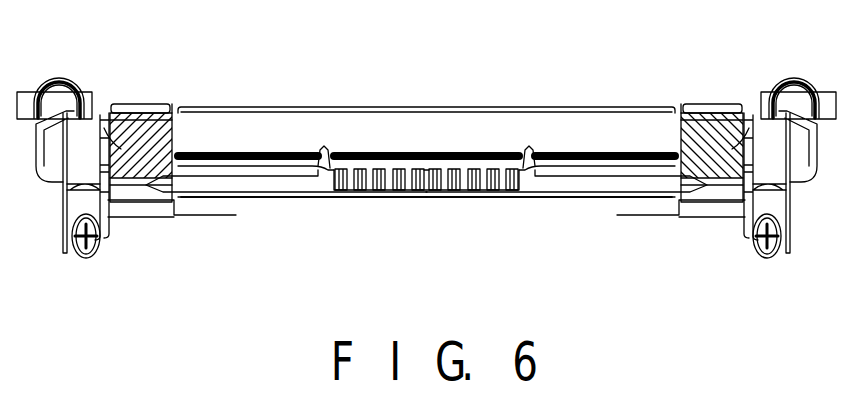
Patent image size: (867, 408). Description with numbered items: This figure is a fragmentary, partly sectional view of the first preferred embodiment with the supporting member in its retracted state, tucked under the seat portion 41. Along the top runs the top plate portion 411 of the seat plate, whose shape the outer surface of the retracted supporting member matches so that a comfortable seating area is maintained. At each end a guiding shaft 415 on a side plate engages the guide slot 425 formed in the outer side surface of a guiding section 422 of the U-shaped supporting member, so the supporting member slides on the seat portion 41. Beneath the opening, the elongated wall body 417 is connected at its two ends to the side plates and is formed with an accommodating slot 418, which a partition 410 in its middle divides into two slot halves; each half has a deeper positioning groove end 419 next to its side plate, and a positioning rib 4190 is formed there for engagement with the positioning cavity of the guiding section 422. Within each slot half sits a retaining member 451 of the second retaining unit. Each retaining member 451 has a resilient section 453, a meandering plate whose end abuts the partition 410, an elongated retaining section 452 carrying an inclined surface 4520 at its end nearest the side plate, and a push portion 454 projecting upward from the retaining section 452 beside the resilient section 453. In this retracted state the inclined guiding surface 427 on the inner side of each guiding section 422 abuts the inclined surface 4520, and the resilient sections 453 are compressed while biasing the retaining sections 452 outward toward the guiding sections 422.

The seat portion 41 is at (527, 84).
The top plate portion 411 is at (436, 108).
The guiding shaft 415 is at (104, 128).
The positioning rib 4190 is at (67, 192).
The guiding section 422 is at (142, 210).
The positioning groove end 419 is at (146, 203).
The guide slot 425 is at (136, 106).
The inclined surface 4520 is at (181, 110).
The inclined guiding surface 427 is at (164, 169).
The accommodating slot 418 is at (283, 164).
The push portion 454 is at (326, 158).
The retaining section 452 is at (272, 185).
The retaining member 451 is at (326, 200).
The elongated wall body 417 is at (516, 195).
The partition 410 is at (425, 197).
The resilient section 453 is at (362, 192).